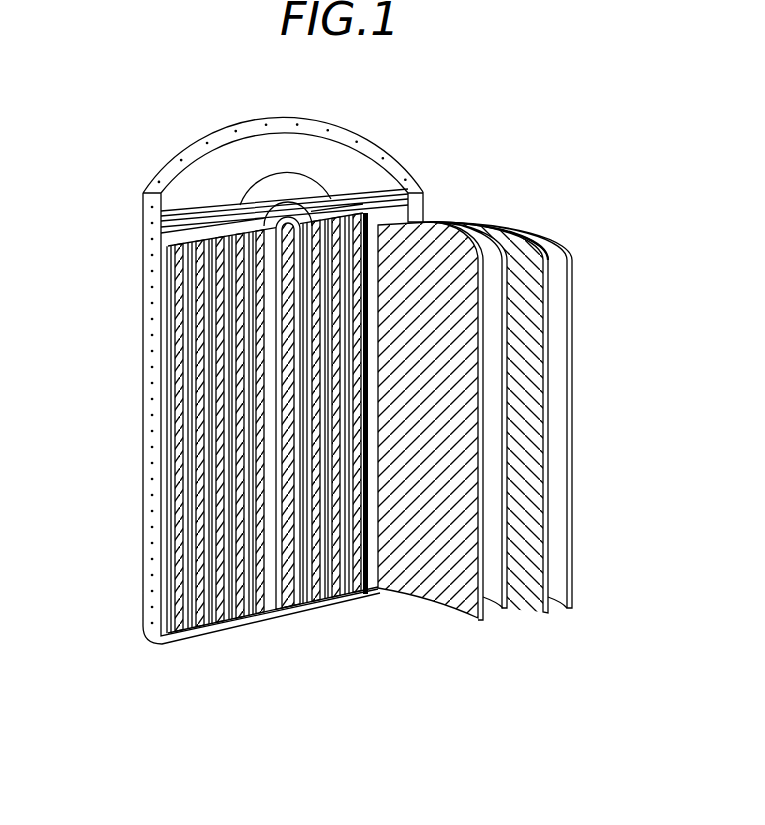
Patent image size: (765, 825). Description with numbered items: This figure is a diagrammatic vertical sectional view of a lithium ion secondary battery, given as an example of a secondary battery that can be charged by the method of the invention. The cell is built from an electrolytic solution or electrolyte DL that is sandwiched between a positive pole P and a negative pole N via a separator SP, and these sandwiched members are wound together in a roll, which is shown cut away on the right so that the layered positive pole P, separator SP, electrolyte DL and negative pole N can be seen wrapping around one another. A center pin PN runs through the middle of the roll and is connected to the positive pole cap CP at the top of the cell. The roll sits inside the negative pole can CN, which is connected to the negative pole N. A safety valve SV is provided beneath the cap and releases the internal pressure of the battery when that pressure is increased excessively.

The negative pole can CN is at (153, 572).
The positive pole cap CP is at (280, 186).
The safety valve SV is at (170, 230).
The electrolyte DL is at (520, 258).
The negative pole N is at (574, 468).
The positive pole P is at (475, 617).
The separator SP is at (546, 612).
The center pin PN is at (290, 600).